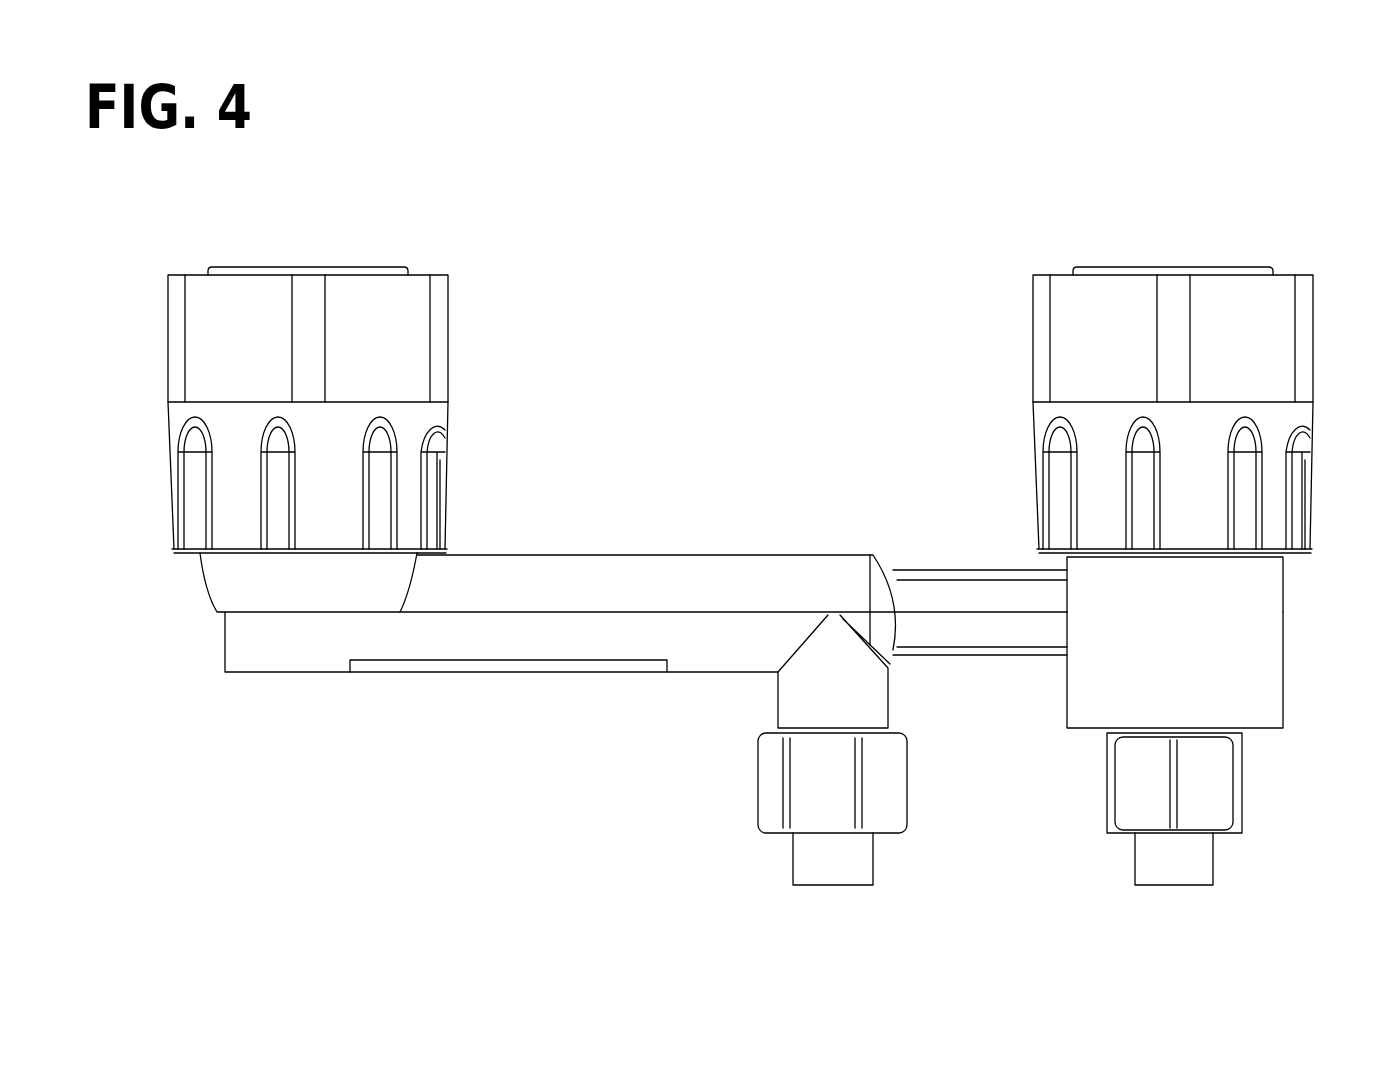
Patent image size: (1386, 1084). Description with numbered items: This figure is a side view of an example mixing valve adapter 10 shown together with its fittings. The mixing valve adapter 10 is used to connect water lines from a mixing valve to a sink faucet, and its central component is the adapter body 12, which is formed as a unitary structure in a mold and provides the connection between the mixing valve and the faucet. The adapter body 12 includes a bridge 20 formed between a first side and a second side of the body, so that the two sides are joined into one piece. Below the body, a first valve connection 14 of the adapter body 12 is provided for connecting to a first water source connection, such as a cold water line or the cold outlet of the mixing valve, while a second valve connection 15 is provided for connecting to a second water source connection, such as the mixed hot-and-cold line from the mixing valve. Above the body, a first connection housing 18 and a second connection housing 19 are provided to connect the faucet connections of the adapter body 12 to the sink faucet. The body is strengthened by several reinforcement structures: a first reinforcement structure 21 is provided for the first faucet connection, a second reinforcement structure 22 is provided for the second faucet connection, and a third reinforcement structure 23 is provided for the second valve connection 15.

The mixing valve adapter 10 is at (512, 237).
The adapter body 12 is at (555, 684).
The first valve connection 14 is at (793, 856).
The second valve connection 15 is at (1213, 865).
The first connection housing 18 is at (479, 354).
The second connection housing 19 is at (1011, 328).
The bridge 20 is at (983, 568).
The first reinforcement structure 21 is at (203, 580).
The second reinforcement structure 22 is at (1283, 593).
The third reinforcement structure 23 is at (1283, 703).